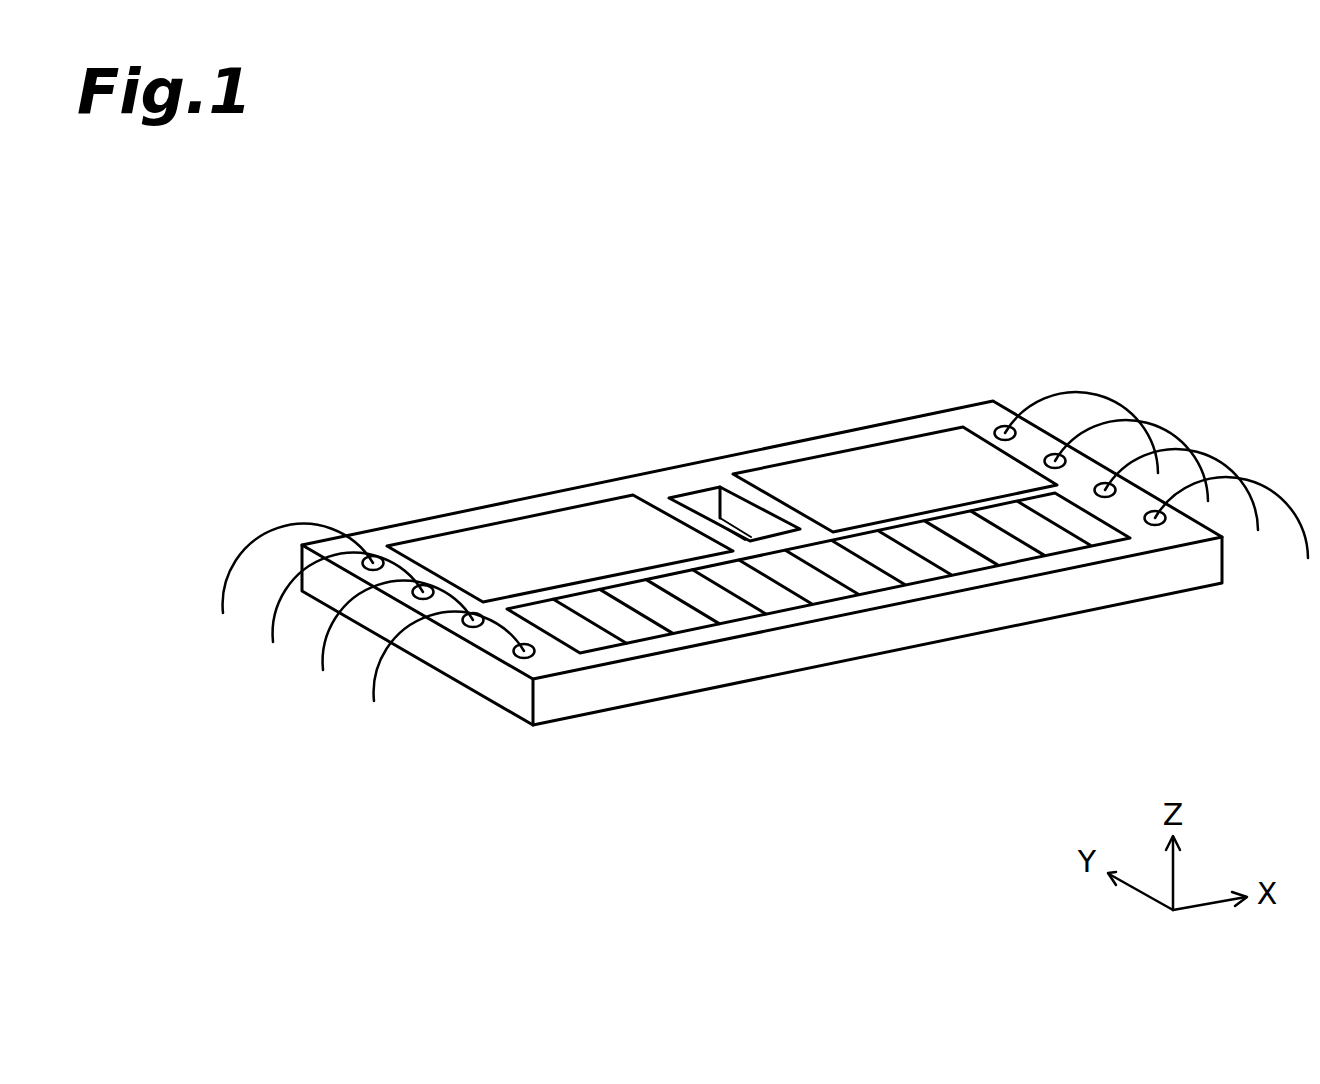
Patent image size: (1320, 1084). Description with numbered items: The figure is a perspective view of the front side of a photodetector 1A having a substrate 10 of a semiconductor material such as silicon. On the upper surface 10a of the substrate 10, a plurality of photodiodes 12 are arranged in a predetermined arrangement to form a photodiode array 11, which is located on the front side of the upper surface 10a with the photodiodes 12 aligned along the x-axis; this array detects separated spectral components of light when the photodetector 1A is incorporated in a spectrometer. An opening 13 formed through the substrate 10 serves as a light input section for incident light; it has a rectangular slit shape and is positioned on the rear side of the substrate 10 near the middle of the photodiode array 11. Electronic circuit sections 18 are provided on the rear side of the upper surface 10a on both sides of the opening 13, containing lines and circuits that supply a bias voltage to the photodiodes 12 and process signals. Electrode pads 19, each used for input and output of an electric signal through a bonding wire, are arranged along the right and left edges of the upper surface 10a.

The photodetector 1A is at (828, 372).
The substrate 10 is at (545, 490).
The upper surface 10a is at (622, 488).
The photodiode array 11 is at (967, 572).
The photodiode 12 is at (773, 600).
The opening 13 is at (707, 498).
The electronic circuit section 18 is at (485, 542).
The electrode pad 19 is at (473, 622).